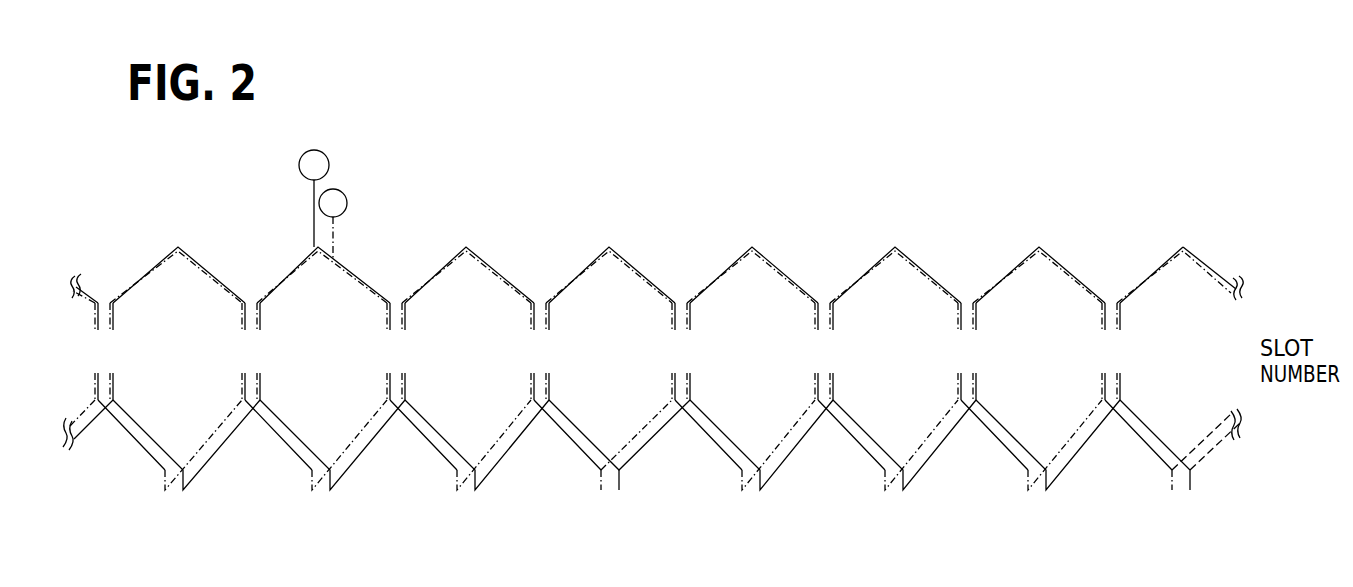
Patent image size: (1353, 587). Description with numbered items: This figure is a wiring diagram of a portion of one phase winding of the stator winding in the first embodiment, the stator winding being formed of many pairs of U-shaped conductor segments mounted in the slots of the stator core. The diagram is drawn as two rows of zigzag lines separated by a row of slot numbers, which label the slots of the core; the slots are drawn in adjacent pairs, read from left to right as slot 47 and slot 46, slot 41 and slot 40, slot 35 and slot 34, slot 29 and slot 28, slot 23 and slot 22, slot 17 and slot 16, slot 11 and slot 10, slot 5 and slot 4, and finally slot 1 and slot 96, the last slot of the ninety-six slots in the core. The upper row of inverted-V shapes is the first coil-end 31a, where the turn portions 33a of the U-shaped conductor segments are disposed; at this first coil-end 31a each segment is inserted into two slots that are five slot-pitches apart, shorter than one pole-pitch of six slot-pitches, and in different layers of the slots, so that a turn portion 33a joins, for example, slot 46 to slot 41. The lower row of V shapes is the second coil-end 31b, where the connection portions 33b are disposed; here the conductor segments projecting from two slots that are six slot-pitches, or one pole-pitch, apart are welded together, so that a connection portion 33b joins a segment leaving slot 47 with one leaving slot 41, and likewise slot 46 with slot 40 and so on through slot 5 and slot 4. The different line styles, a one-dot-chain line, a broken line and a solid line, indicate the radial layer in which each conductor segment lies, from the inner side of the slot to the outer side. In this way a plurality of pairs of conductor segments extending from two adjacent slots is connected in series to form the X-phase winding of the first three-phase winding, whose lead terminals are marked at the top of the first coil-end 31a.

The first coil-end 31a is at (1246, 242).
The second coil-end 31b is at (1246, 407).
The turn portions 33a is at (611, 244).
The connection portions 33b is at (600, 488).
The slot 47 is at (89, 351).
The slot 46 is at (118, 351).
The slot 41 is at (236, 351).
The slot 40 is at (265, 351).
The slot 35 is at (381, 351).
The slot 34 is at (410, 351).
The slot 29 is at (525, 351).
The slot 28 is at (554, 351).
The slot 23 is at (666, 351).
The slot 22 is at (696, 351).
The slot 17 is at (808, 351).
The slot 16 is at (838, 351).
The slot 11 is at (952, 351).
The slot 10 is at (981, 351).
The slot 5 is at (1100, 351).
The slot 4 is at (1121, 351).
The slot 1 is at (1209, 311).
The slot 96 is at (1215, 409).